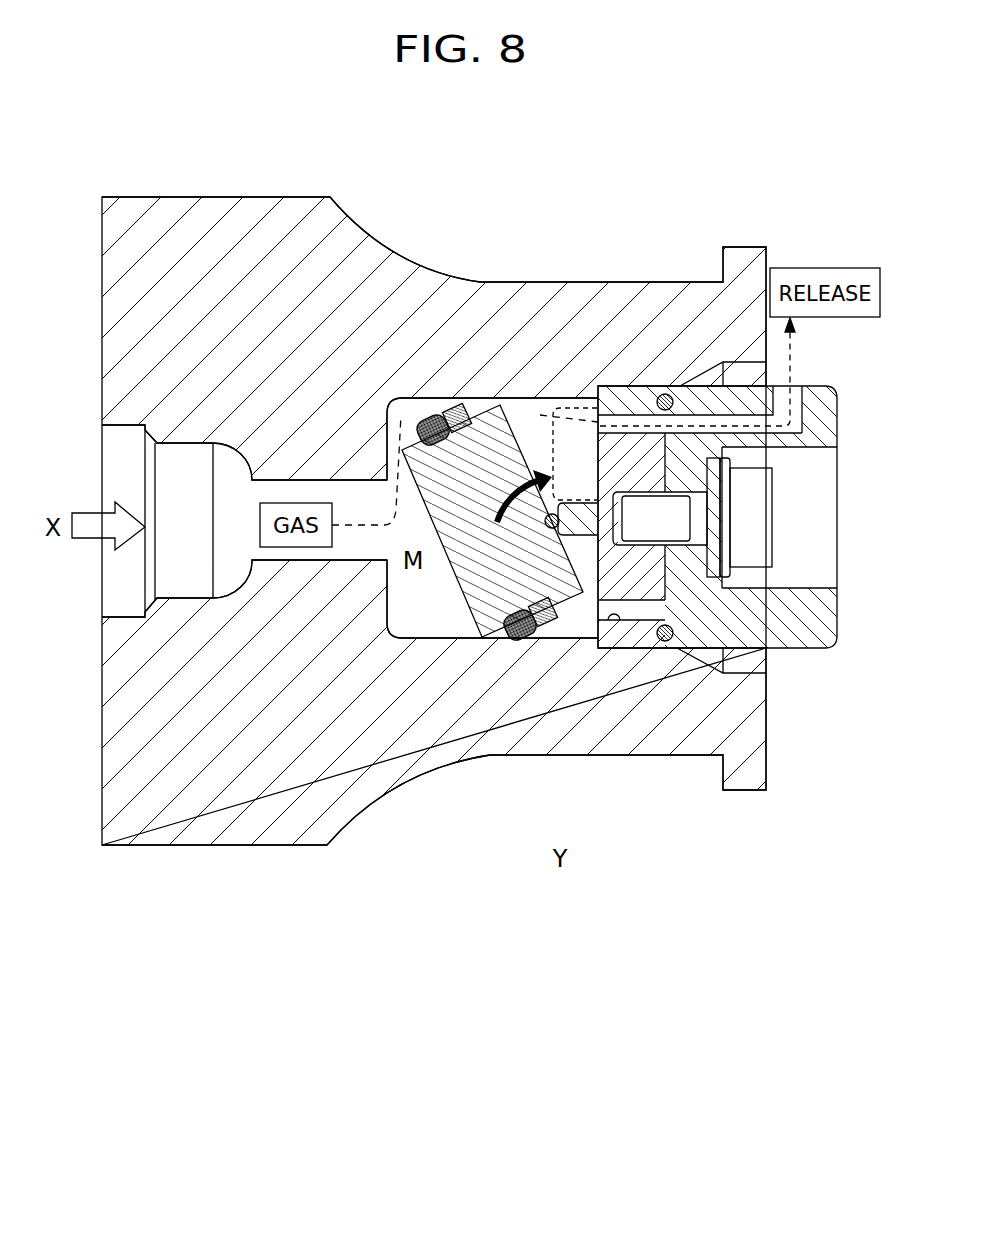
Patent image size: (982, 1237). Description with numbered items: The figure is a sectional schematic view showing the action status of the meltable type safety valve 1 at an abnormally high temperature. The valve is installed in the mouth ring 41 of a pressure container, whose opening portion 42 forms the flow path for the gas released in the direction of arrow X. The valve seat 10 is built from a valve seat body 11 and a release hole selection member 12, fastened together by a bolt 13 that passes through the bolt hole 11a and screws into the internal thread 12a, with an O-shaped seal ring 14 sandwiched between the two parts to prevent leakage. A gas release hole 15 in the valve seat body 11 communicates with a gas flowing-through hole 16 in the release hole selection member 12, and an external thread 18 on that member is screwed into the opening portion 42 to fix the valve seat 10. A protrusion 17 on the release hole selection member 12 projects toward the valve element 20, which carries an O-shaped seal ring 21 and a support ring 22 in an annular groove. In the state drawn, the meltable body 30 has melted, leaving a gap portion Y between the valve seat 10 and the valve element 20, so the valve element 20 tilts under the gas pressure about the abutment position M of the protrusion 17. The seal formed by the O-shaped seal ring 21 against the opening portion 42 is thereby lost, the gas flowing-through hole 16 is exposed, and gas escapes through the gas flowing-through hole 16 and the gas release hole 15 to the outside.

The meltable type safety valve 1 is at (802, 670).
The valve seat 10 is at (737, 660).
The valve seat body 11 is at (738, 381).
The bolt hole 11a is at (733, 535).
The release hole selection member 12 is at (657, 386).
The internal thread 12a is at (733, 487).
The bolt 13 is at (762, 518).
The O-shaped seal ring 14 is at (677, 650).
The gas release hole 15 is at (802, 390).
The gas flowing-through hole 16 is at (612, 440).
The protrusion 17 is at (545, 470).
The external thread 18 is at (630, 650).
The valve element 20 is at (478, 405).
The O-shaped seal ring 21 is at (513, 632).
The support ring 22 is at (575, 605).
The meltable body 30 is at (569, 404).
The mouth ring 41 is at (233, 878).
The opening portion 42 is at (416, 598).